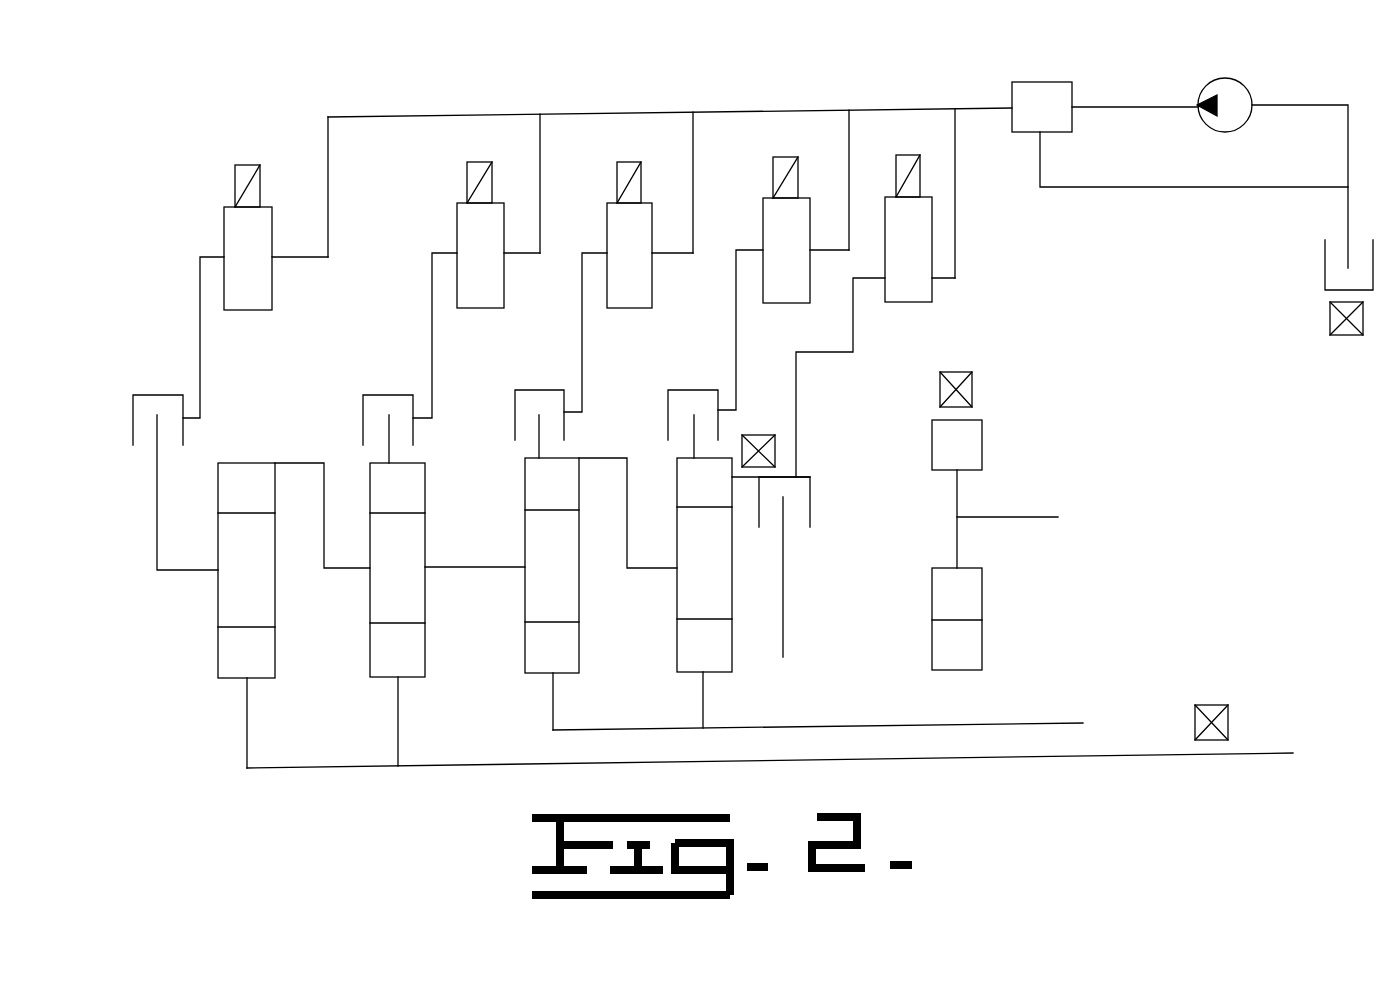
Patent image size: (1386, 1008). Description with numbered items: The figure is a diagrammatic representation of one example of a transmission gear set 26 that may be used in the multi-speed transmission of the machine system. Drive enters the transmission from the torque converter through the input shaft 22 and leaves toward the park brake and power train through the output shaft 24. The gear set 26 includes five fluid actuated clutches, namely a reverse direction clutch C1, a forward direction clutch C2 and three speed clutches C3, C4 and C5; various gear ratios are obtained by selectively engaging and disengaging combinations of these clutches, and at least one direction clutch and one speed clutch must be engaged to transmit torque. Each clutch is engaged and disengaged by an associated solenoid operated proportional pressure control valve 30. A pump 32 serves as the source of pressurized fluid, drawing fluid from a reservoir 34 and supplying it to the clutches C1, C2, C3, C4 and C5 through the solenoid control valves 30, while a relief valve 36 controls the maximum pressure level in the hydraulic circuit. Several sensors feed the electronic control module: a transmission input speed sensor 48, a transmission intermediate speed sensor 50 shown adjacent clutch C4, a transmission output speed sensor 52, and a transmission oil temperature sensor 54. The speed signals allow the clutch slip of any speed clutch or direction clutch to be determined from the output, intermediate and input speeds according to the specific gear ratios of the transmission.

The input shaft 22 is at (1228, 722).
The output shaft 24 is at (1020, 517).
The transmission gear set 26 is at (240, 102).
The solenoid control valves 30 is at (235, 187).
The pump 32 is at (1222, 78).
The reservoir 34 is at (1325, 272).
The relief valve 36 is at (1040, 82).
The transmission input speed sensor 48 is at (1195, 728).
The transmission intermediate speed sensor 50 is at (781, 393).
The transmission output speed sensor 52 is at (972, 385).
The transmission oil temperature sensor 54 is at (1330, 322).
The reverse direction clutch C1 is at (251, 564).
The forward direction clutch C2 is at (444, 563).
The speed clutch C3 is at (596, 545).
The speed clutch C4 is at (739, 544).
The speed clutch C5 is at (805, 567).